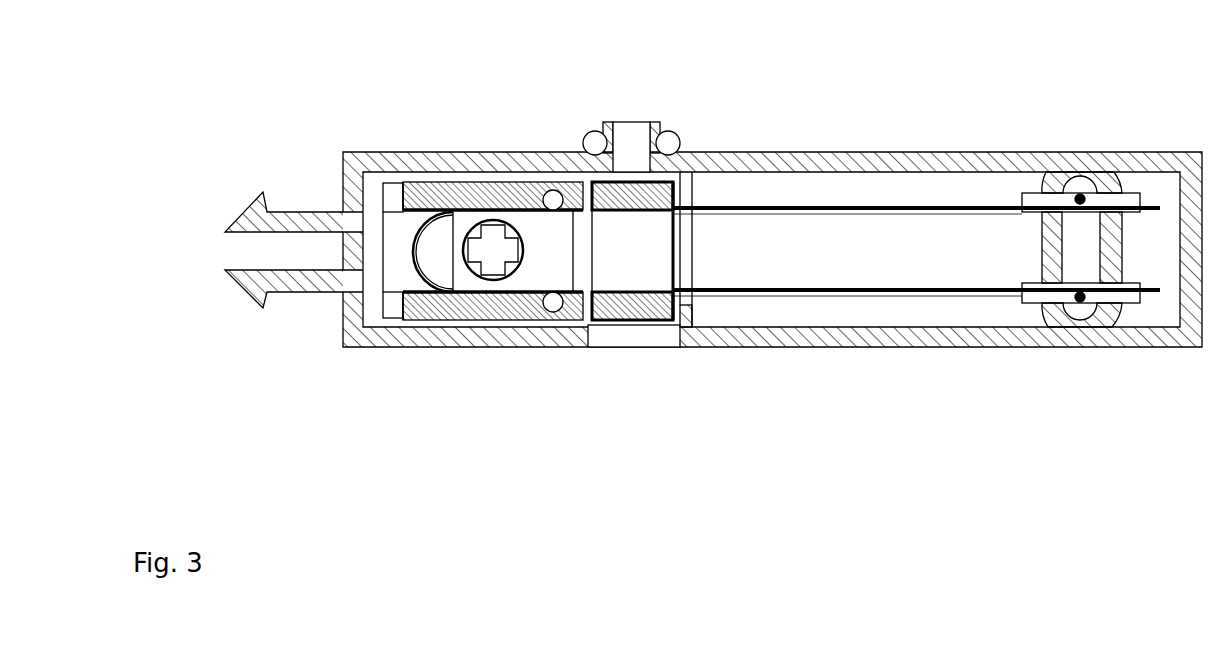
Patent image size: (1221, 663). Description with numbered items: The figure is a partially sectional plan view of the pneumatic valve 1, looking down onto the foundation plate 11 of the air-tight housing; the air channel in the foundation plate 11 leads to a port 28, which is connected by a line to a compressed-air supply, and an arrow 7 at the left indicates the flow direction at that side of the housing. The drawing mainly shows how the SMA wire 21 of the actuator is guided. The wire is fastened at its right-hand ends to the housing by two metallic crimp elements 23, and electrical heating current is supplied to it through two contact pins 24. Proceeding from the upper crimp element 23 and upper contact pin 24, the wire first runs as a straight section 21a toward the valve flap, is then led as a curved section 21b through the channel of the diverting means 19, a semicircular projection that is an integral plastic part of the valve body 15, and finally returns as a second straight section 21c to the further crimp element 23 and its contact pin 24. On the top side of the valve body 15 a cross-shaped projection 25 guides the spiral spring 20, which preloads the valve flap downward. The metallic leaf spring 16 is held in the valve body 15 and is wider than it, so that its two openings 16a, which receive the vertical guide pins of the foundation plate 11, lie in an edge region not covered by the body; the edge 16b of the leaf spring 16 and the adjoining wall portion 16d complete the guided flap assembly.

The pneumatic valve 1 is at (797, 68).
The fluid flow direction 7 is at (242, 251).
The foundation plate 11 is at (822, 165).
The valve body 15 is at (634, 275).
The leaf spring 16 is at (487, 252).
The openings of the leaf spring 16a is at (551, 190).
The piston end face 16b is at (415, 182).
The cylinder guide 16d is at (705, 172).
The diverting element 19 is at (425, 245).
The spiral spring 20 is at (514, 251).
The SMA wire 21 is at (916, 235).
The straight section of the SMA wire 21a is at (878, 206).
The curved section of the SMA wire 21b is at (405, 318).
The straight section of the SMA wire 21c is at (873, 288).
The crimp elements 23 is at (1030, 193).
The contact pins 24 is at (1082, 195).
The cross-shaped projection 25 is at (520, 258).
The port 28 is at (631, 128).